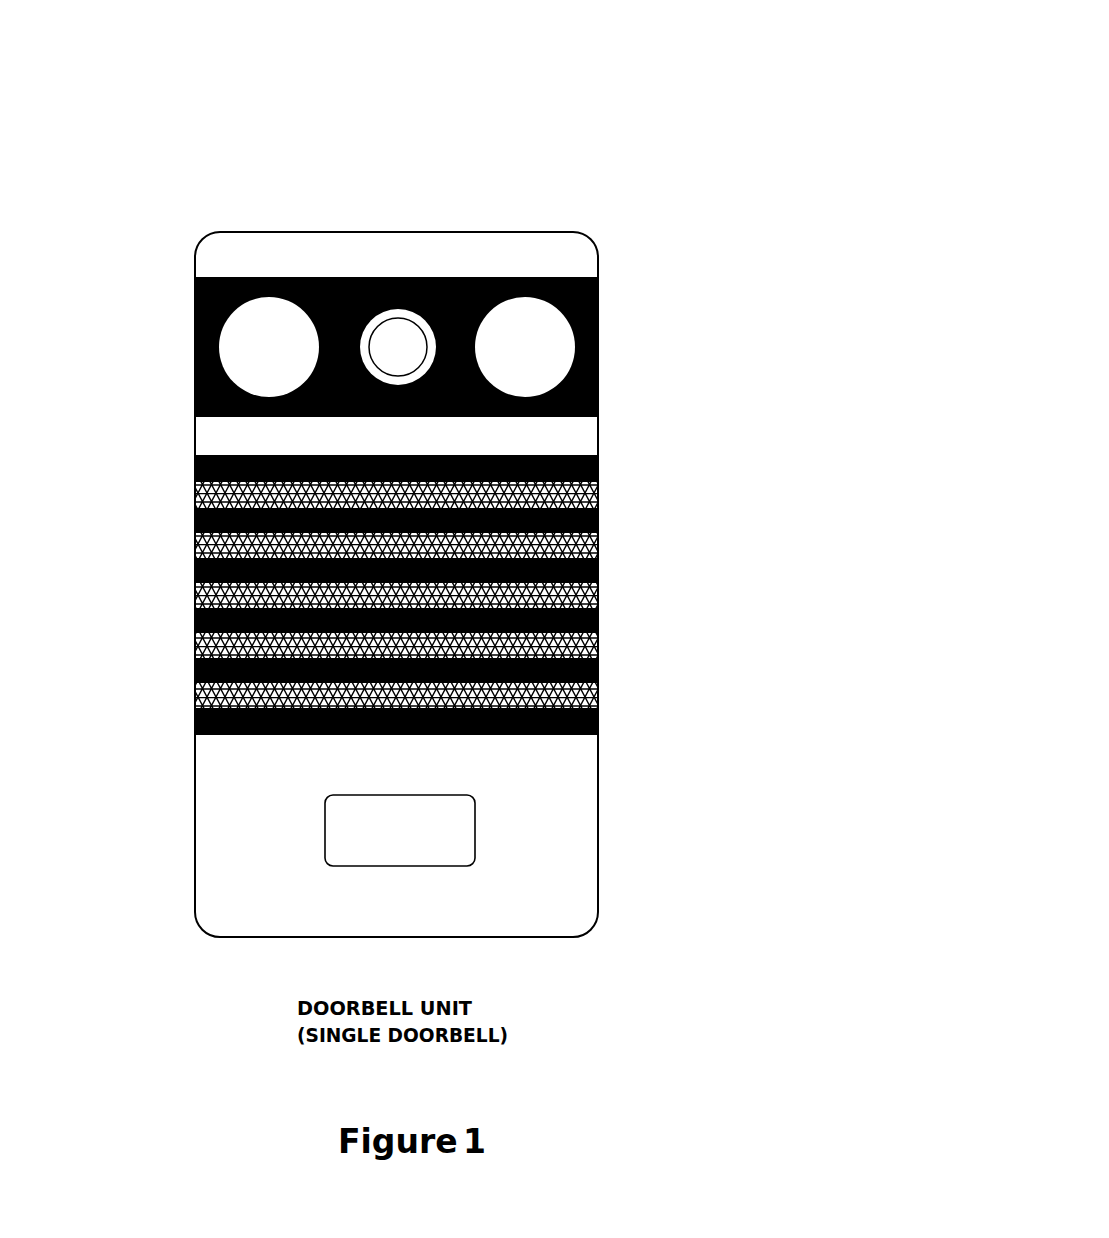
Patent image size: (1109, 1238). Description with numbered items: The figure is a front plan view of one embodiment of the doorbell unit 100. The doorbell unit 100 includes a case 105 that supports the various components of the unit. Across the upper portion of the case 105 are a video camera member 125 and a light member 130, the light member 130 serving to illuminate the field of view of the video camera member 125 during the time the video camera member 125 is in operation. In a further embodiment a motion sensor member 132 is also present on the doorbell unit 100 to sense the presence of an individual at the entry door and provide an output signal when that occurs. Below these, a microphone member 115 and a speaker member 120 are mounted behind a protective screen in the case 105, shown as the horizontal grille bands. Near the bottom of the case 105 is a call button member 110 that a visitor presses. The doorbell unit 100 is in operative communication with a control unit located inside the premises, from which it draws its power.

The doorbell unit 100 is at (522, 527).
The case 105 is at (598, 757).
The call button member 110 is at (327, 835).
The microphone member 115 is at (578, 555).
The speaker member 120 is at (583, 554).
The video camera member 125 is at (743, 194).
The light member 130 is at (277, 322).
The motion sensor member 132 is at (547, 332).